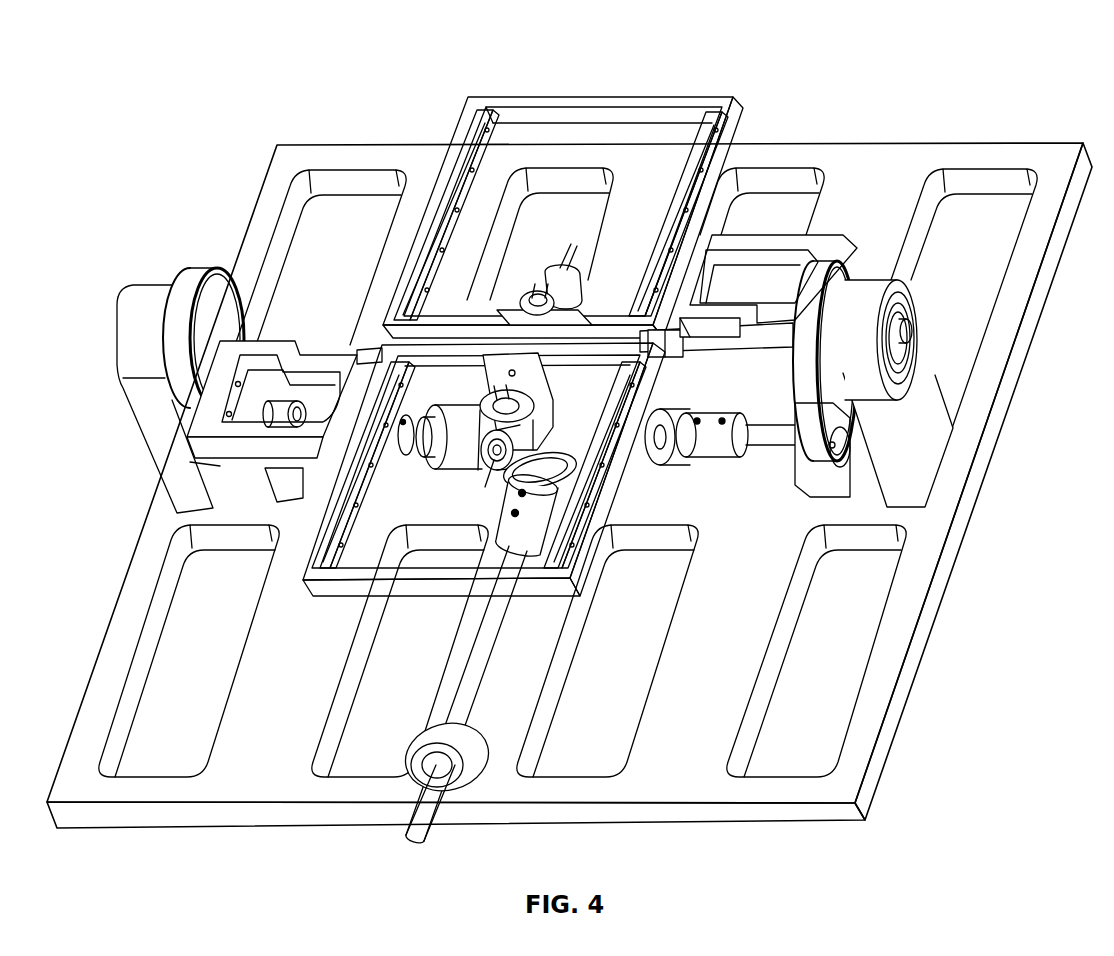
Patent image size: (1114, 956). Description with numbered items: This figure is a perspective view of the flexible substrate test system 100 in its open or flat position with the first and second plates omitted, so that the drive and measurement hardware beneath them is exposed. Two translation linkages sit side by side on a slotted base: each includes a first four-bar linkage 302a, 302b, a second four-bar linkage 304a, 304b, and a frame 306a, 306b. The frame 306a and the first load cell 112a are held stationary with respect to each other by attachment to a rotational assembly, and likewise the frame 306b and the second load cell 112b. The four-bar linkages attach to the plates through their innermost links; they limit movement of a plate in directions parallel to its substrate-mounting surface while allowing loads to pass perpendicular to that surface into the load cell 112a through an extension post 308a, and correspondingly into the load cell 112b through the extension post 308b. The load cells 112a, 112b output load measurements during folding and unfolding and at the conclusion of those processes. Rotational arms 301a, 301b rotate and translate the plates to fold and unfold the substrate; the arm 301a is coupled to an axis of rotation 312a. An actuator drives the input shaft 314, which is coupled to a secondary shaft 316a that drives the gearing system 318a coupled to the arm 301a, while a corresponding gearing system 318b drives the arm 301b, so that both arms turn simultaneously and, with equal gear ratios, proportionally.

The flexible substrate test system 100 is at (235, 33).
The first load cell 112a is at (556, 268).
The second load cell 112b is at (512, 420).
The first rotational arm 301a is at (840, 235).
The second rotational arm 301b is at (292, 341).
The first four-bar linkage 302a is at (490, 188).
The first four-bar linkage 302b is at (398, 480).
The second four-bar linkage 304a is at (650, 197).
The second four-bar linkage 304b is at (572, 500).
The frame 306a is at (733, 97).
The frame 306b is at (422, 596).
The extension post 308a is at (532, 292).
The extension post 308b is at (497, 393).
The axis of rotation 312a is at (914, 330).
The input shaft 314 is at (420, 846).
The secondary shaft 316a is at (777, 440).
The gearing system 318a is at (797, 264).
The gearing system 318b is at (176, 246).